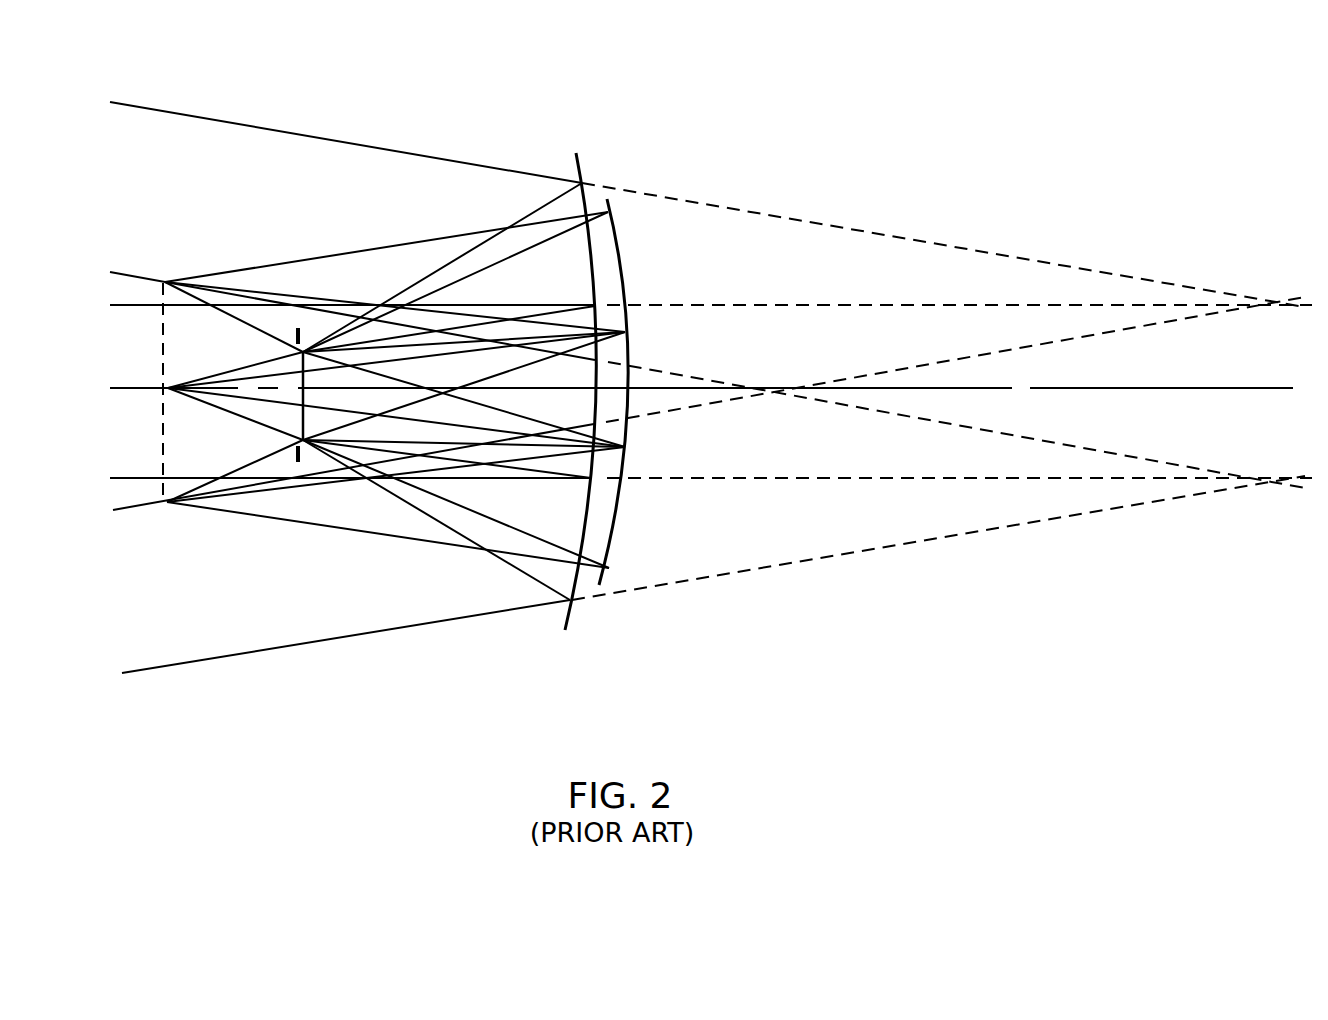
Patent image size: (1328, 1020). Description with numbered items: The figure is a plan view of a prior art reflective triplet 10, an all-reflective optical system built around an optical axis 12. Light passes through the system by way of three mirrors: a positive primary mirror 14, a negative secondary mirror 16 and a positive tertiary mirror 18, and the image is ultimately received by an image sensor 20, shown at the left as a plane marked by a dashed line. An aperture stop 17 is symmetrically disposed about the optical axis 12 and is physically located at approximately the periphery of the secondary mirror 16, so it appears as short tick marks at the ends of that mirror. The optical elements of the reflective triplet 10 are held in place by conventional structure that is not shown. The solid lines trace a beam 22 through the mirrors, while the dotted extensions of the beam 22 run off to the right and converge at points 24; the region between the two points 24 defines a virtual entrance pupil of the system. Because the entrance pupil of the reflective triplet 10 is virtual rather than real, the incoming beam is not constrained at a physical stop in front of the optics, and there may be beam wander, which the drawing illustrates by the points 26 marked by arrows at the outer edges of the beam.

The reflective triplet 10 is at (692, 142).
The optical axis 12 is at (1257, 392).
The primary mirror 14 is at (588, 504).
The secondary mirror 16 is at (301, 432).
The aperture stop 17 is at (295, 333).
The tertiary mirror 18 is at (617, 512).
The image sensor 20 is at (160, 345).
The beam 22 is at (333, 641).
The points 24 is at (1277, 300).
The points 26 is at (177, 112).